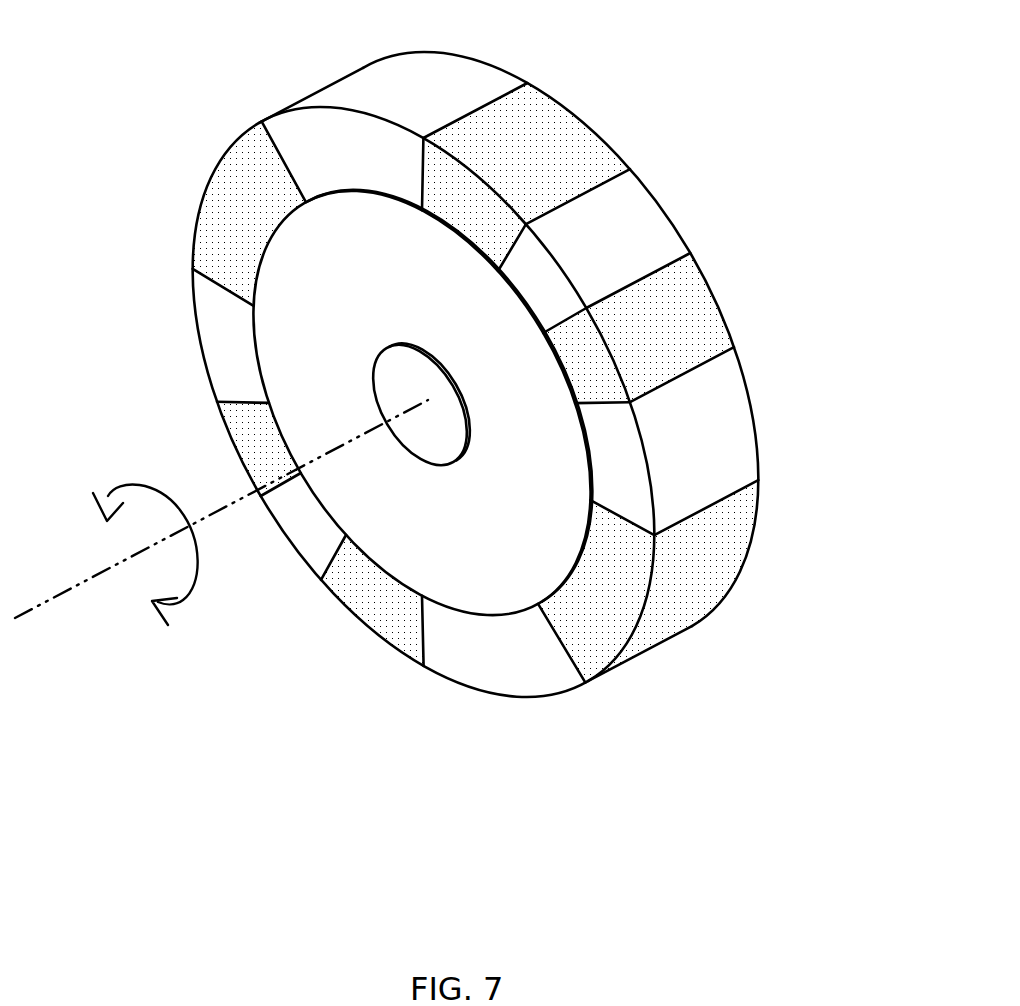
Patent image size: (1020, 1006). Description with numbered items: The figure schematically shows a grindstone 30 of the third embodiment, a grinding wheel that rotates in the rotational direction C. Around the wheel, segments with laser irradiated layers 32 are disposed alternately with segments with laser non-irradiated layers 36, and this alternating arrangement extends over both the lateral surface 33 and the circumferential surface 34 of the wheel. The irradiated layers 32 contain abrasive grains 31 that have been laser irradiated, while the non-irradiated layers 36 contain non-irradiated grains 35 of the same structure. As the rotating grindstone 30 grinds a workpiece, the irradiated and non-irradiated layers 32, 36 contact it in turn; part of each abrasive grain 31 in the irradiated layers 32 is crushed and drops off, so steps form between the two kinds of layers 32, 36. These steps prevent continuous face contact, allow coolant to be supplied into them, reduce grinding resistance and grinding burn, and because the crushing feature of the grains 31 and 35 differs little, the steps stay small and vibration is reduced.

The grindstone 30 is at (830, 230).
The abrasive grains 31 is at (466, 394).
The laser irradiated layers 32 is at (578, 157).
The lateral surface 33 is at (504, 677).
The circumferential surface 34 is at (467, 84).
The non-irradiated grains 35 is at (498, 401).
The laser non-irradiated layers 36 is at (744, 410).
The rotational direction C is at (108, 496).